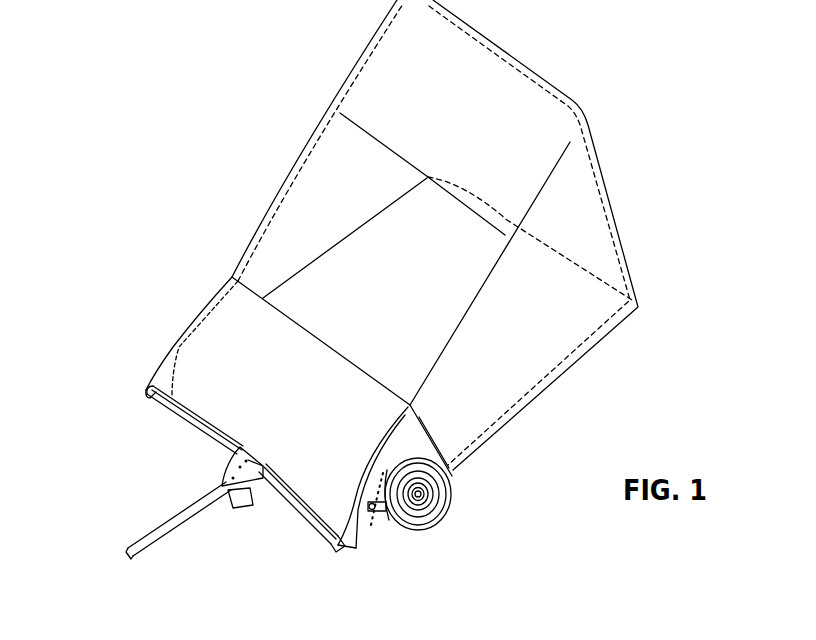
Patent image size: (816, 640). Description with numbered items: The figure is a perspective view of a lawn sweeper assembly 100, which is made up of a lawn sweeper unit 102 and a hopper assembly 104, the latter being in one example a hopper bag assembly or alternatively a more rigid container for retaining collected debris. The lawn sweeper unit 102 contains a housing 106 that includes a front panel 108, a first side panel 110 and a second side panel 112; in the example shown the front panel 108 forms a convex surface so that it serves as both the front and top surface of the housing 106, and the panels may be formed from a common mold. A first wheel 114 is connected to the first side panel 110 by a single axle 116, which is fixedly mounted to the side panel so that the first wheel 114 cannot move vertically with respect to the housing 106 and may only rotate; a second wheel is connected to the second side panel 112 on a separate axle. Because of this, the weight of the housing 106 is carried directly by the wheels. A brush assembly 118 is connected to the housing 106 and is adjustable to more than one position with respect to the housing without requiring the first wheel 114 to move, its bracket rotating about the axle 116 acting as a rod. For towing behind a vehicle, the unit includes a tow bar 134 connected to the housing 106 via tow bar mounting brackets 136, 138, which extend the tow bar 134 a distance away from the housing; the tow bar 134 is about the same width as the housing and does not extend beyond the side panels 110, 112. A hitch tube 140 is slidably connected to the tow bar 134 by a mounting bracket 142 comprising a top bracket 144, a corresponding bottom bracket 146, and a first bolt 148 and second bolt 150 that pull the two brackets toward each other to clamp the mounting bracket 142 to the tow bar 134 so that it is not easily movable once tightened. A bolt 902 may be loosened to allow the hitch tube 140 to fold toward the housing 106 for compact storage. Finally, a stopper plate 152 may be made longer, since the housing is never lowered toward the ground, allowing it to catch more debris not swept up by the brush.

The lawn sweeper assembly 100 is at (115, 89).
The lawn sweeper unit 102 is at (179, 293).
The hopper assembly 104 is at (277, 144).
The housing 106 is at (197, 330).
The front panel 108 is at (190, 363).
The first side panel 110 is at (363, 533).
The second side panel 112 is at (217, 288).
The first wheel 114 is at (423, 523).
The axle 116 is at (423, 497).
The brush assembly 118 is at (386, 523).
The tow bar 134 is at (175, 411).
The tow bar mounting bracket 136 is at (343, 548).
The tow bar mounting bracket 138 is at (165, 380).
The hitch tube 140 is at (138, 563).
The mounting bracket 142 is at (216, 525).
The top bracket 144 is at (228, 466).
The bottom bracket 146 is at (267, 507).
The first bolt 148 is at (250, 465).
The second bolt 150 is at (244, 492).
The stopper plate 152 is at (458, 477).
The bolt 902 is at (224, 479).